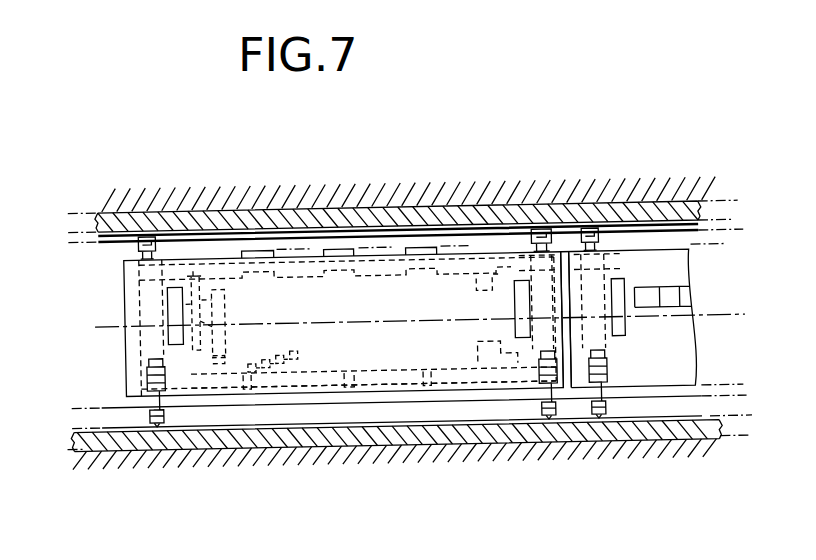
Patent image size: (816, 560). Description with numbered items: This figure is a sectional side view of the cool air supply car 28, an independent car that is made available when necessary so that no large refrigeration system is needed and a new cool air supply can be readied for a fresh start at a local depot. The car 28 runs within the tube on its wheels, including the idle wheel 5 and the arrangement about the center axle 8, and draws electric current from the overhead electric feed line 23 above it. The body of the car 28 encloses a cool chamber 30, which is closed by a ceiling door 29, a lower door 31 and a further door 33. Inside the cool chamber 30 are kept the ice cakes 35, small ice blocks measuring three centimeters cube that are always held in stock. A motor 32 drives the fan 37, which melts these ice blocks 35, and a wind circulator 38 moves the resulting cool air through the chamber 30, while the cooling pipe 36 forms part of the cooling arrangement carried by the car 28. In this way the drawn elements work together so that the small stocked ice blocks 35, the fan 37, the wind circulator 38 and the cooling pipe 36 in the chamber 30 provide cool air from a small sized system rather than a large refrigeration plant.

The idle wheel 5 is at (147, 236).
The center axle 8 is at (568, 393).
The overhead electric feed line 23 is at (377, 232).
The cool air supply car 28 is at (123, 278).
The ceiling door 29 is at (266, 250).
The cool chamber 30 is at (384, 355).
The lower door 31 is at (246, 276).
The motor 32 is at (208, 280).
The door 33 is at (177, 289).
The ice cake 35 is at (297, 357).
The cooling pipe 36 is at (517, 273).
The fan 37 is at (224, 358).
The wind circulator 38 is at (479, 284).